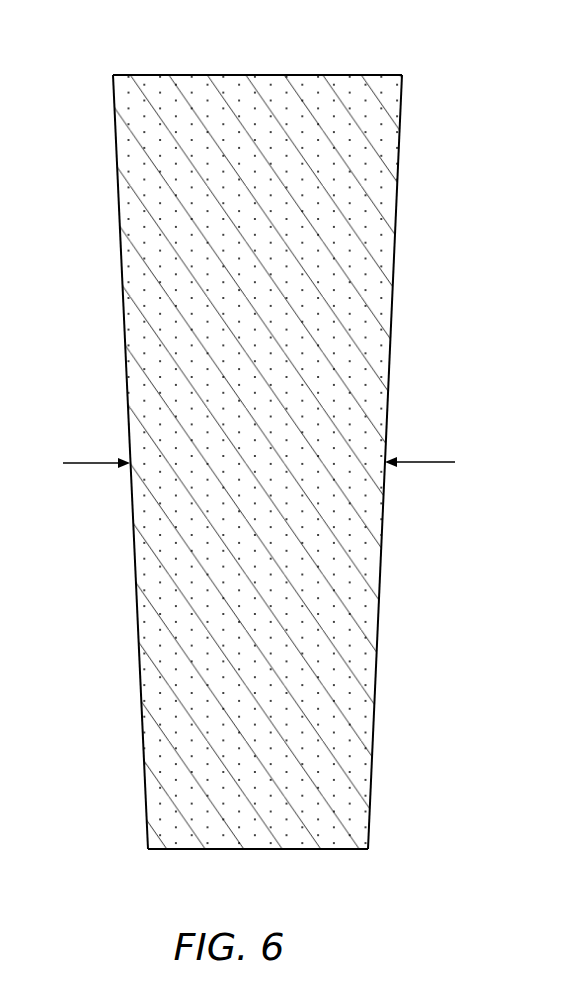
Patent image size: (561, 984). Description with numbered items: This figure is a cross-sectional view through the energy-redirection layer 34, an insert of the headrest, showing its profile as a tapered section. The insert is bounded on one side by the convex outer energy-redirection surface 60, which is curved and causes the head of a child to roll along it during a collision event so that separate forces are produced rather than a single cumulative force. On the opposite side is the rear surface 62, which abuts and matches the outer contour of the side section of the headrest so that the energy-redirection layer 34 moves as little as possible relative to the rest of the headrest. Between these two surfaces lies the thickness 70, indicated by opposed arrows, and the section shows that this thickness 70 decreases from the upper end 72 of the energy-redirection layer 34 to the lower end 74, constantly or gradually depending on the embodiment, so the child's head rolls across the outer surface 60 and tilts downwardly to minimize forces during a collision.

The energy-redirection layer 34 is at (420, 82).
The outer energy-redirection surface 60 is at (395, 242).
The rear surface 62 is at (120, 242).
The thickness 70 is at (433, 462).
The upper end 72 is at (257, 75).
The lower end 74 is at (255, 849).